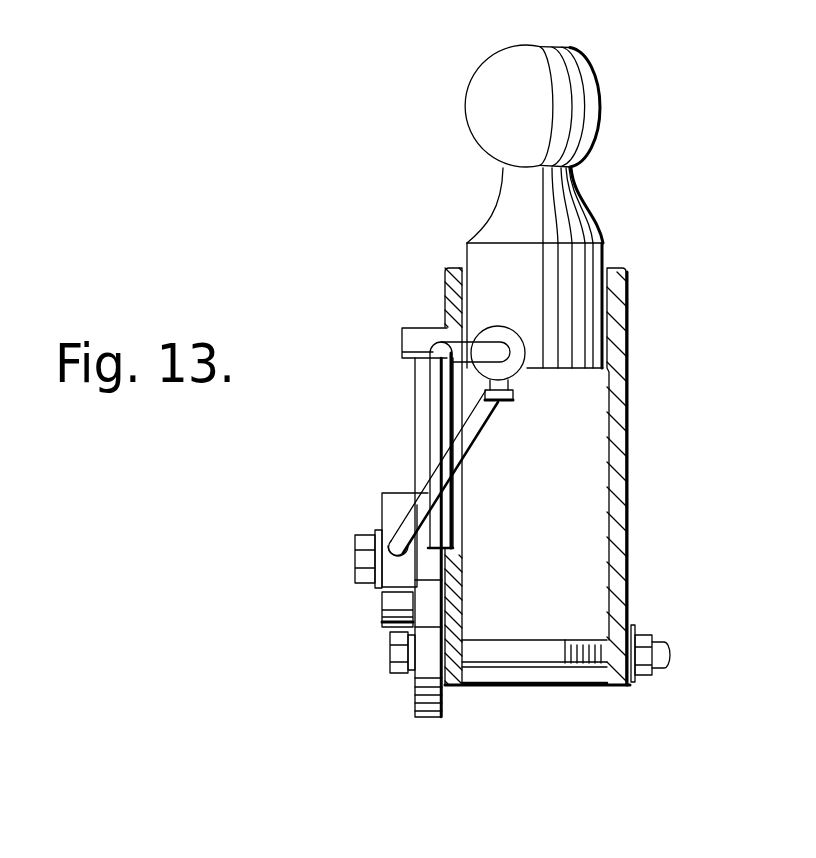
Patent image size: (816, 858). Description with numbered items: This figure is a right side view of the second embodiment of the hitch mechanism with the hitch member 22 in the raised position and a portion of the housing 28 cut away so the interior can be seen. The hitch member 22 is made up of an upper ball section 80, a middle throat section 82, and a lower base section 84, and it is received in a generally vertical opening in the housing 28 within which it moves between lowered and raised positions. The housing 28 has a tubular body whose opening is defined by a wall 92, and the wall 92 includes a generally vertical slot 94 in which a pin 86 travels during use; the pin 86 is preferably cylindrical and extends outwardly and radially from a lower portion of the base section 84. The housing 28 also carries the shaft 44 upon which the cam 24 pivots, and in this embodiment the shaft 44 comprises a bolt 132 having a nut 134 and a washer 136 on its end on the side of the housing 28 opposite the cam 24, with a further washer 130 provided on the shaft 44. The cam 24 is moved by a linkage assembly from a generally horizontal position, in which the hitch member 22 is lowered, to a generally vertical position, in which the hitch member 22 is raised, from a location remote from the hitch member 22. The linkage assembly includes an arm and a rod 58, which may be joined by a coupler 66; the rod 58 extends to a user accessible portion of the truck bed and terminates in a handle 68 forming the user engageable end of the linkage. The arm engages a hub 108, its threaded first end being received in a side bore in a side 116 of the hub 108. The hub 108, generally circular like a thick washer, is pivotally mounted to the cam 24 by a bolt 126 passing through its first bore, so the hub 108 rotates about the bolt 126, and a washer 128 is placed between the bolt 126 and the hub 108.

The upper ball section 80 is at (488, 97).
The hitch member 22 is at (540, 268).
The middle throat section 82 is at (540, 215).
The lower base section 84 is at (603, 248).
The housing 28 is at (567, 476).
The wall 92 is at (617, 490).
The vertical slot 94 is at (457, 575).
The pin 86 is at (413, 335).
The coupler 66 is at (517, 358).
The handle 68 is at (438, 412).
The rod 58 is at (462, 413).
The side of the hub 116 is at (395, 500).
The washer 128 is at (378, 528).
The bolt 126 is at (362, 557).
The hub 108 is at (392, 600).
The bolt 132 is at (398, 652).
The washer 130 is at (412, 685).
The cam 24 is at (412, 693).
The shaft 44 is at (528, 650).
The washer 136 is at (635, 687).
The nut 134 is at (652, 675).